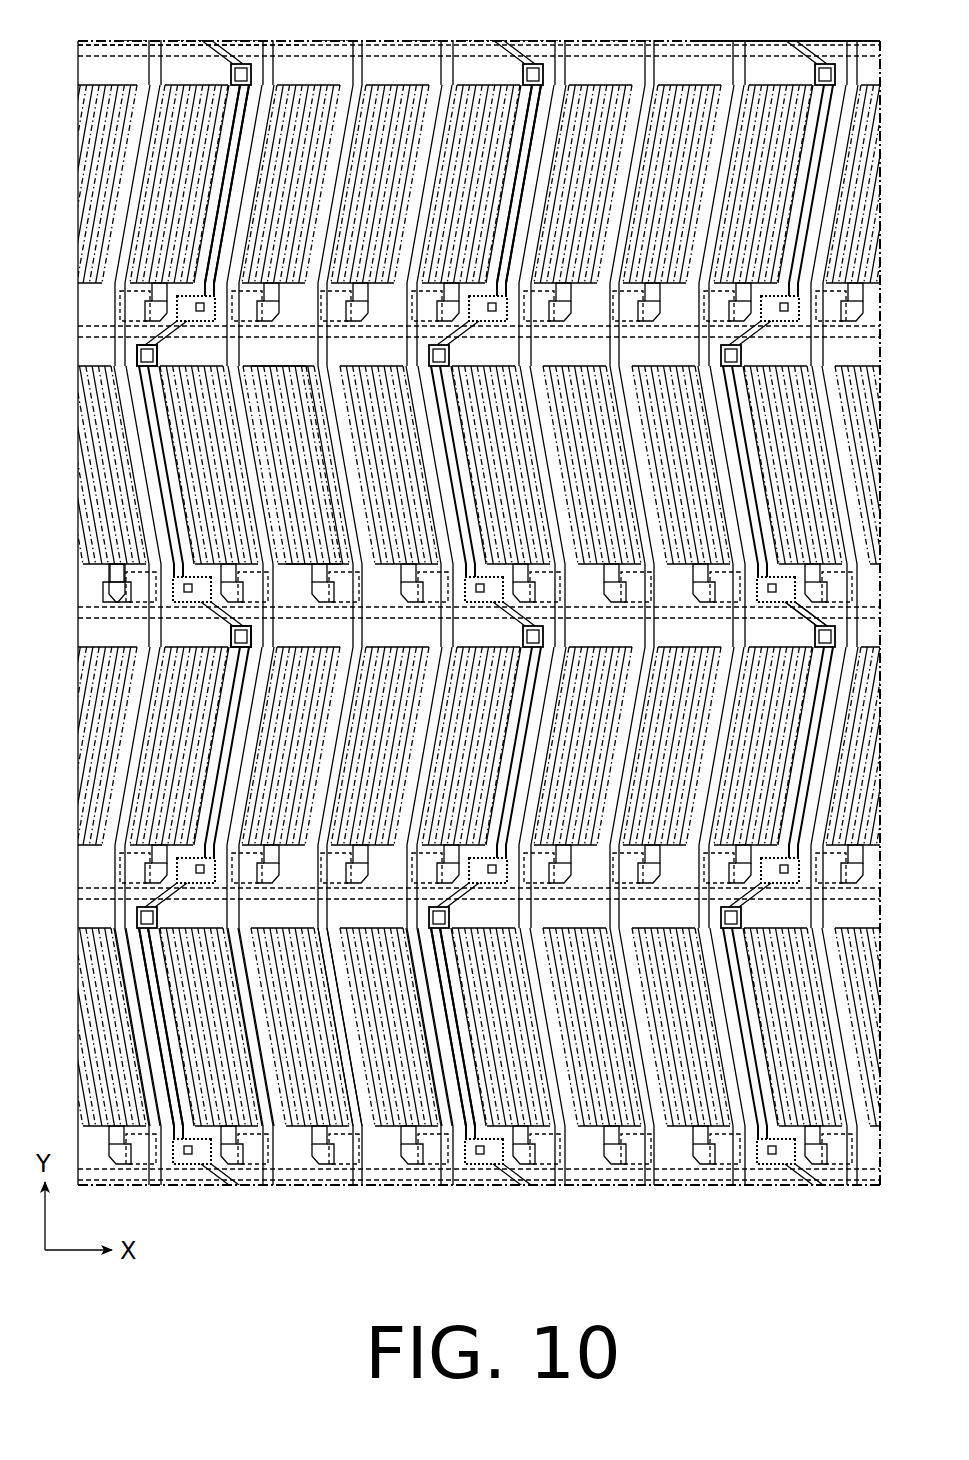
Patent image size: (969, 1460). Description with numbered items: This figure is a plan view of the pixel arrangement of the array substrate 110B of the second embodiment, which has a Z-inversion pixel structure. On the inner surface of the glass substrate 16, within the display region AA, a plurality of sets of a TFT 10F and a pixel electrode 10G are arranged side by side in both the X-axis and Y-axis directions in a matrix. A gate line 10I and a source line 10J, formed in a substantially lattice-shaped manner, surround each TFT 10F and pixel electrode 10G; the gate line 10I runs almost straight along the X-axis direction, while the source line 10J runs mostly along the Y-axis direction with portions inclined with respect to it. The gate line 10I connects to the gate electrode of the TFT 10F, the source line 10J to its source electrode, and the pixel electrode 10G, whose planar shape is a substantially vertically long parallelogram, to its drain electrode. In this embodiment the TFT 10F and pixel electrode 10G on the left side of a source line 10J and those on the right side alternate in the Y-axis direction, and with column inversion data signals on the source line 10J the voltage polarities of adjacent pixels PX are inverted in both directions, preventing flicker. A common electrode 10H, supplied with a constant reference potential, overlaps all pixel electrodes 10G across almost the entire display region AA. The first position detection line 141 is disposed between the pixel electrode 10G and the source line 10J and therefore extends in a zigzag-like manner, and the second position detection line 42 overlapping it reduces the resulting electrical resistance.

The glass substrate 16 is at (125, 78).
The first position detection line 141 is at (497, 303).
The second position detection line 42 is at (520, 163).
The array substrate 110B is at (836, 35).
The pixel electrode 10G is at (138, 352).
The display region AA is at (858, 352).
The pixel portion PX is at (283, 497).
The gate line 10I is at (105, 607).
The common electrode 10H is at (788, 633).
The TFT 10F is at (240, 631).
The source line 10J is at (130, 1000).